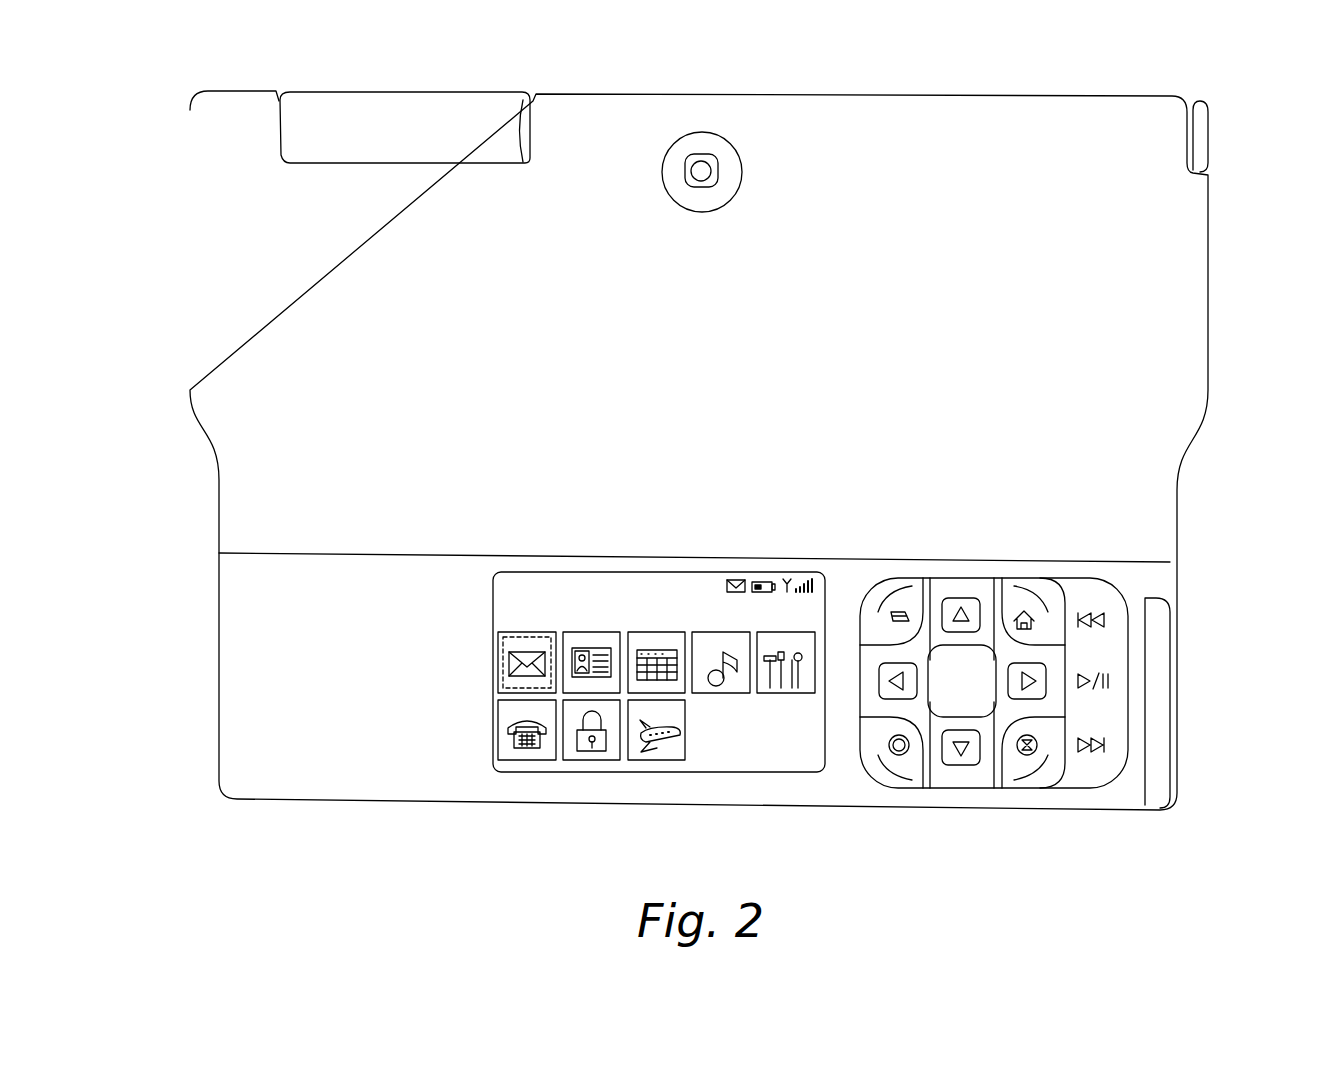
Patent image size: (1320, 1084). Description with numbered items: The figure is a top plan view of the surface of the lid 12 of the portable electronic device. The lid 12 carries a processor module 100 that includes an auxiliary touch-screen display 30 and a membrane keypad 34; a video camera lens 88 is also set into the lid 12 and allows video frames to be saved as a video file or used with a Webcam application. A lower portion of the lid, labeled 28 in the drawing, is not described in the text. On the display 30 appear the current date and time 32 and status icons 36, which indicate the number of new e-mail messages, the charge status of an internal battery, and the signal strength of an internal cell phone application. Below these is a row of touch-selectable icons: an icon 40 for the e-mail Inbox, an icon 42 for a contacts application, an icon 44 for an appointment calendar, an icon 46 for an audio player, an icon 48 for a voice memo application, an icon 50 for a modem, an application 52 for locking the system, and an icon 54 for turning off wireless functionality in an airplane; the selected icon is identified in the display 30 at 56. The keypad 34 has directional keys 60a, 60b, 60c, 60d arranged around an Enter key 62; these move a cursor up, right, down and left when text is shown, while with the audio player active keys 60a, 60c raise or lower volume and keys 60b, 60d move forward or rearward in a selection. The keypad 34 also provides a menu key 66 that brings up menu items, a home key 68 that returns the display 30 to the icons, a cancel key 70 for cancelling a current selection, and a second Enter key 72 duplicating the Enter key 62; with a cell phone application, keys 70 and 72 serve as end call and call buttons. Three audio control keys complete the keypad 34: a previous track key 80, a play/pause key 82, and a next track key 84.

The lid 12 is at (1185, 352).
The lower housing portion 28 is at (345, 740).
The auxiliary touch-screen display 30 is at (740, 745).
The current date and time 32 is at (512, 578).
The membrane keypad 34 is at (978, 788).
The status icons 36 is at (775, 579).
The icon for accessing the Inbox of an e-mail application 40 is at (510, 665).
The icon for accessing a contacts application 42 is at (590, 643).
The icon for accessing an appointment calendar application 44 is at (668, 645).
The icon for accessing an audio player application 46 is at (728, 648).
The icon for accessing a voice memo application 48 is at (780, 655).
The icon for accessing a modem 50 is at (505, 750).
The application for locking the system 52 is at (588, 748).
The icon for turning off wireless functionality 54 is at (662, 748).
The selected icon indication 56 is at (497, 615).
The directional key 60a is at (957, 600).
The directional key 60b is at (1047, 685).
The directional key 60c is at (963, 762).
The directional key 60d is at (878, 681).
The Enter key 62 is at (975, 650).
The menu key 66 is at (888, 598).
The home key 68 is at (1030, 608).
The cancel key 70 is at (1027, 752).
The Enter key 72 is at (898, 755).
The previous track key 80 is at (1103, 619).
The play/pause key 82 is at (1112, 682).
The next track key 84 is at (1103, 748).
The video camera lens 88 is at (705, 170).
The processor module 100 is at (278, 650).